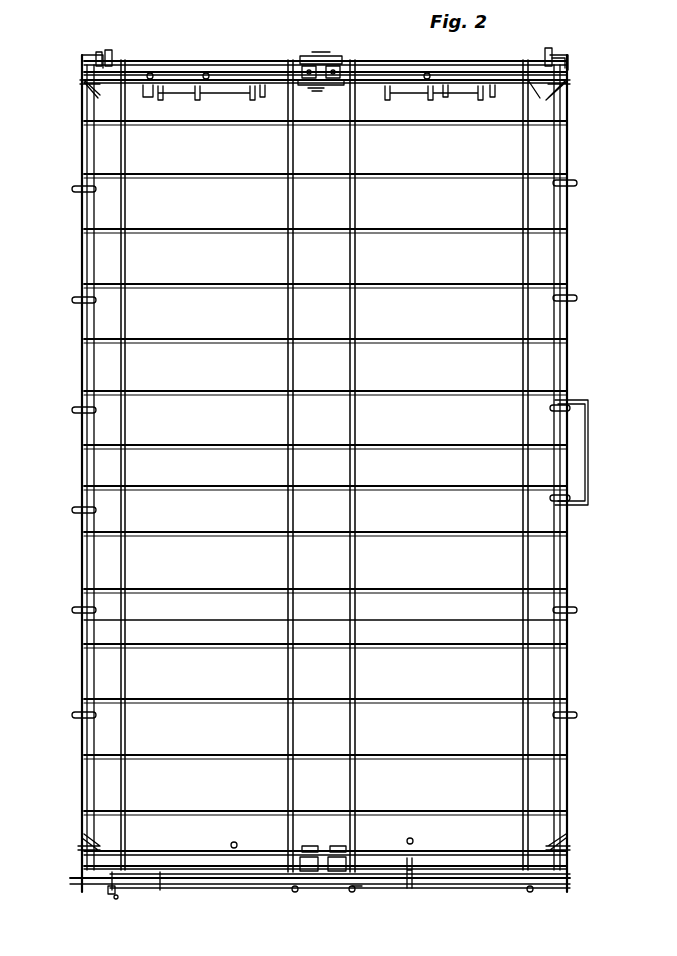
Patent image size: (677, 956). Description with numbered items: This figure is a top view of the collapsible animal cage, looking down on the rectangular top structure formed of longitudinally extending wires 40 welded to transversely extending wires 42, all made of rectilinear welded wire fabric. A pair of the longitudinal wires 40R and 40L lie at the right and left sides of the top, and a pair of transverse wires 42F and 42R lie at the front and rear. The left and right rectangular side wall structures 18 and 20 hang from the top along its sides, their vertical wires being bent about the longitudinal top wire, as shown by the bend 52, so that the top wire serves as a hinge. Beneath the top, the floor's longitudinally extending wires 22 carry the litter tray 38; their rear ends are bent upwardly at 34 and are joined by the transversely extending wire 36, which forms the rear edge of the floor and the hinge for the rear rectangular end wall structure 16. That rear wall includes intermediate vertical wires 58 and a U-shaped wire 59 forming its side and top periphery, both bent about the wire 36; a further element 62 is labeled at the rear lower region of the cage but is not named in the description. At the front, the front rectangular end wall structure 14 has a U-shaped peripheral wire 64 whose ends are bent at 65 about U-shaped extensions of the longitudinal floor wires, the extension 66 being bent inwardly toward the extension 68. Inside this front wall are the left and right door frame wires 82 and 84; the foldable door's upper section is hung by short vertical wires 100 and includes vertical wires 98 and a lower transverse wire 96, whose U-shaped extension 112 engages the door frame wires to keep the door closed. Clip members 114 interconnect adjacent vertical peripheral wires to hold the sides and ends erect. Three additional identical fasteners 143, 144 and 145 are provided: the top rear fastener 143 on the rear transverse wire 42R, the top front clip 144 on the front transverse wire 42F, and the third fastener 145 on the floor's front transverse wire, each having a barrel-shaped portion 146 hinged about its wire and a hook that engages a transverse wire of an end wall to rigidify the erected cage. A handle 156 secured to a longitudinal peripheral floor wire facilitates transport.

The front rectangular end wall structure 14 is at (408, 37).
The rear rectangular end wall structure 16 is at (276, 900).
The left hand rectangular side wall structure 18 is at (613, 355).
The right hand rectangular side wall structure 20 is at (59, 465).
The longitudinally extending wires 22 is at (358, 888).
The upwardly bent rear end portions 34 is at (112, 893).
The transversely extending wire 36 is at (152, 884).
The litter tray 38 is at (200, 680).
The longitudinally extending wires of top structure 40 is at (357, 262).
The right longitudinal top wire 40R is at (82, 258).
The left longitudinal top wire 40L is at (567, 258).
The transversely extending wires of top structure 42 is at (190, 228).
The front transverse top wire 42F is at (197, 75).
The rear transverse top wire 42R is at (163, 884).
The bend 52 is at (78, 188).
The intermediate vertically extending wires 58 is at (410, 841).
The U-shaped wire 59 is at (163, 851).
The bottom connector 62 is at (412, 886).
The U-shaped peripheral wire 64 is at (538, 85).
The bent ends of peripheral wire 65 is at (108, 55).
The U-shaped extension 66 is at (556, 55).
The U-shaped extension 68 is at (96, 55).
The left door frame wire 82 is at (495, 98).
The right door frame wire 84 is at (148, 100).
The lower transversely extending wire of upper door section 96 is at (266, 100).
The vertically extending wires of upper door section 98 is at (192, 98).
The short vertical wires 100 is at (425, 92).
The U-shaped extension 112 is at (152, 72).
The clip member 114 is at (88, 92).
The top rear fastener 143 is at (310, 838).
The top front clip 144 is at (350, 48).
The third fastener 145 is at (323, 45).
The barrel-shaped portion 146 is at (312, 875).
The handle 156 is at (590, 457).